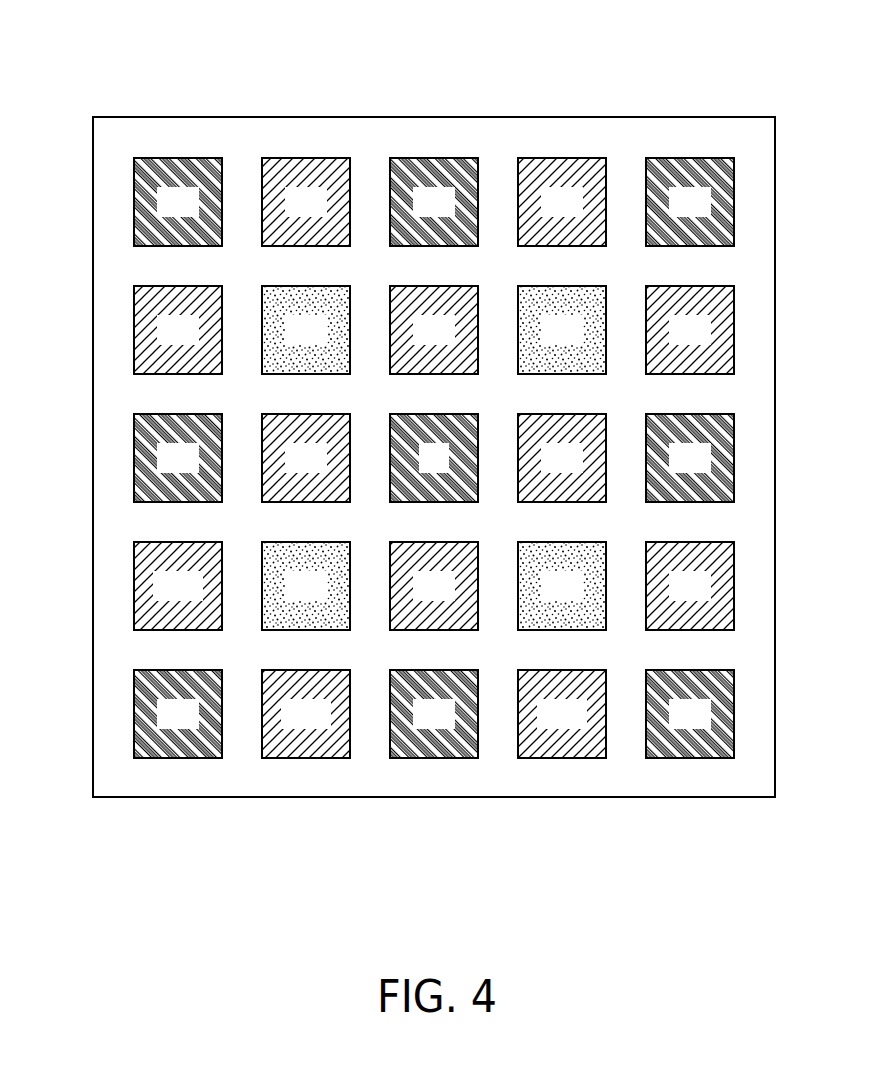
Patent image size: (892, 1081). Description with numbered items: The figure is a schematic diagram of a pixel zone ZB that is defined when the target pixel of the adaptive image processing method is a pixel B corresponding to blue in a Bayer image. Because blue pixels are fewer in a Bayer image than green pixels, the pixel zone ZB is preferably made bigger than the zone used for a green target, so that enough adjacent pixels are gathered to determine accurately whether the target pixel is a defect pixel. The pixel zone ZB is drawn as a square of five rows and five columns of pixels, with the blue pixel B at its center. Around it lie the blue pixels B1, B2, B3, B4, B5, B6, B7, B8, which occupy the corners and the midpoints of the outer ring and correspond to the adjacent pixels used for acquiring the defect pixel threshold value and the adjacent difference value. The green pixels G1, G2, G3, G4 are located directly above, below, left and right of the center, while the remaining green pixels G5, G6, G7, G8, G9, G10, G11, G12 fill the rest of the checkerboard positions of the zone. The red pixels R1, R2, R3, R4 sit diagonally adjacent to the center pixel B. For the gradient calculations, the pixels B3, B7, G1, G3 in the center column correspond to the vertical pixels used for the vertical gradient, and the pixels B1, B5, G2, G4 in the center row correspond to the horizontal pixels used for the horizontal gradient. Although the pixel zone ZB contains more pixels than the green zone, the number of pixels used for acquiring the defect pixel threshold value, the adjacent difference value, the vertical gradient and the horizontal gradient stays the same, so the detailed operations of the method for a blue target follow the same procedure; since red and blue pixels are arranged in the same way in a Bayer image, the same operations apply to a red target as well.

The pixel zone ZB is at (433, 117).
The pixel corresponding to blue B is at (434, 458).
The pixel corresponding to blue B1 is at (178, 458).
The pixel corresponding to blue B2 is at (178, 202).
The pixel corresponding to blue B3 is at (434, 202).
The pixel corresponding to blue B4 is at (690, 202).
The pixel corresponding to blue B5 is at (690, 458).
The pixel corresponding to blue B6 is at (690, 714).
The pixel corresponding to blue B7 is at (434, 714).
The pixel corresponding to blue B8 is at (178, 714).
The pixel corresponding to green G1 is at (306, 458).
The pixel corresponding to green G2 is at (434, 330).
The pixel corresponding to green G3 is at (562, 458).
The pixel corresponding to green G4 is at (434, 586).
The pixel corresponding to green G5 is at (178, 330).
The pixel corresponding to green G6 is at (306, 202).
The pixel corresponding to green G7 is at (562, 202).
The pixel corresponding to green G8 is at (690, 330).
The pixel corresponding to green G9 is at (690, 586).
The pixel corresponding to green G10 is at (562, 714).
The pixel corresponding to green G11 is at (306, 714).
The pixel corresponding to green G12 is at (178, 586).
The pixel corresponding to red R1 is at (306, 330).
The pixel corresponding to red R2 is at (562, 330).
The pixel corresponding to red R3 is at (562, 586).
The pixel corresponding to red R4 is at (306, 586).